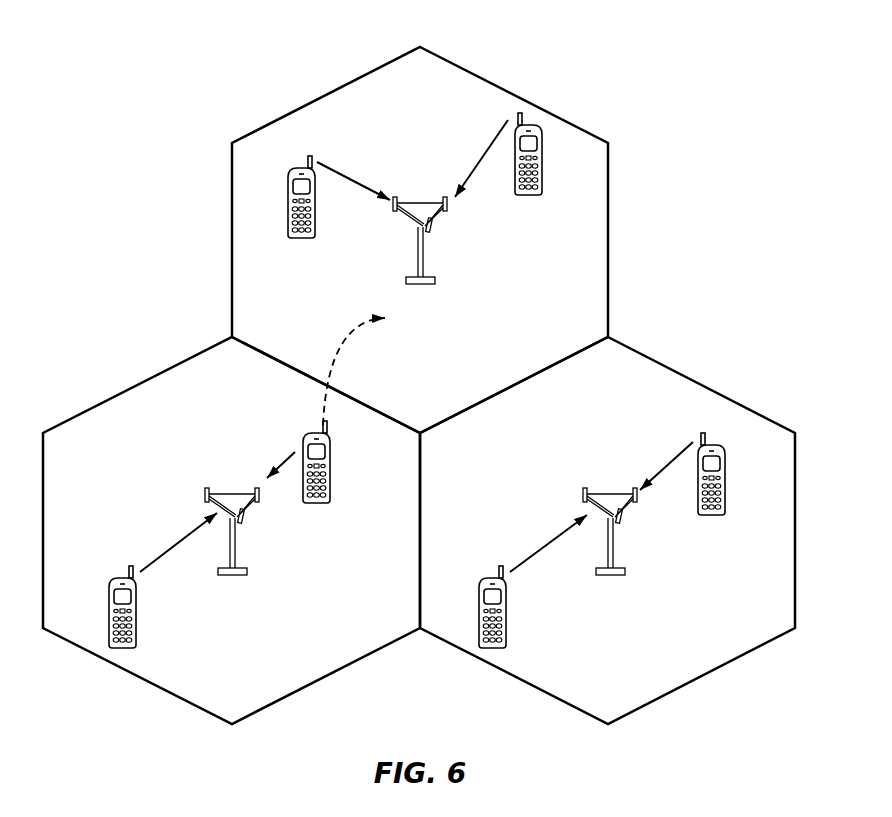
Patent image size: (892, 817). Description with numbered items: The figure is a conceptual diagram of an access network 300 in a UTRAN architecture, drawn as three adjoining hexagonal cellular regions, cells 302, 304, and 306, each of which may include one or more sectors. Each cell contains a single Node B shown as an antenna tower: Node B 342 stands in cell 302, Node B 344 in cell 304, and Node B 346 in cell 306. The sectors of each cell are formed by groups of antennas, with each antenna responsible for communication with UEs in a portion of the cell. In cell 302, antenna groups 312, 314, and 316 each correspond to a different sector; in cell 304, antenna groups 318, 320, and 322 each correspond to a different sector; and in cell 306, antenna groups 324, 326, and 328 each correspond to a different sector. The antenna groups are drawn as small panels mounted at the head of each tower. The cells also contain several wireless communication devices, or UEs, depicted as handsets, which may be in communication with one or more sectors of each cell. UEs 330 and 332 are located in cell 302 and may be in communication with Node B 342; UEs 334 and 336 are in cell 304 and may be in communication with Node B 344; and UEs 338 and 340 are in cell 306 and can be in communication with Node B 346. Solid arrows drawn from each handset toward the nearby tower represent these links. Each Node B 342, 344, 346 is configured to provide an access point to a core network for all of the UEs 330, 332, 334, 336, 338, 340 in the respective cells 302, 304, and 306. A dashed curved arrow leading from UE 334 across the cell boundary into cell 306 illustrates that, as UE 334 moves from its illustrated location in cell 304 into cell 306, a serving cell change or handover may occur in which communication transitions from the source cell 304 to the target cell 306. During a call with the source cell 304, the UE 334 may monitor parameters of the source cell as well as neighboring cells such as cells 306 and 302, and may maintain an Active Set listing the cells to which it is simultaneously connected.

The access network 300 is at (720, 73).
The cell 302 is at (702, 385).
The cell 304 is at (116, 394).
The cell 306 is at (498, 86).
The antenna group 312 is at (584, 490).
The antenna group 314 is at (621, 523).
The antenna group 316 is at (636, 502).
The antenna group 318 is at (243, 523).
The antenna group 320 is at (258, 502).
The antenna group 322 is at (206, 494).
The antenna group 324 is at (395, 211).
The antenna group 326 is at (431, 232).
The antenna group 328 is at (446, 211).
The UE 330 is at (723, 472).
The UE 332 is at (479, 600).
The UE 334 is at (329, 462).
The UE 336 is at (109, 600).
The UE 338 is at (295, 238).
The UE 340 is at (531, 195).
The Node B 342 is at (612, 488).
The Node B 344 is at (233, 488).
The Node B 346 is at (423, 197).